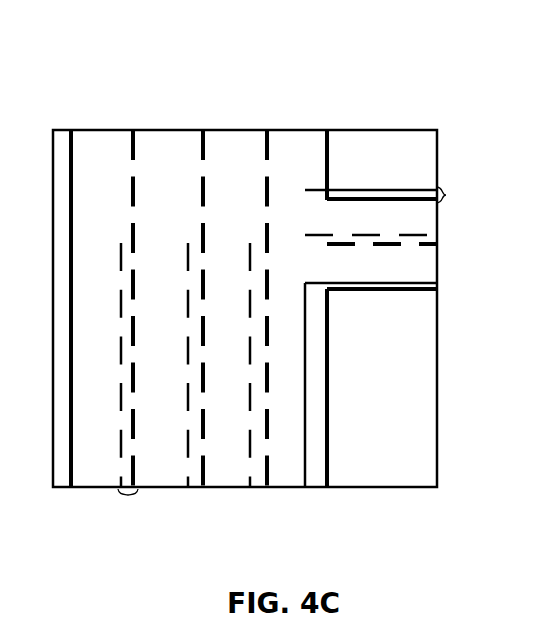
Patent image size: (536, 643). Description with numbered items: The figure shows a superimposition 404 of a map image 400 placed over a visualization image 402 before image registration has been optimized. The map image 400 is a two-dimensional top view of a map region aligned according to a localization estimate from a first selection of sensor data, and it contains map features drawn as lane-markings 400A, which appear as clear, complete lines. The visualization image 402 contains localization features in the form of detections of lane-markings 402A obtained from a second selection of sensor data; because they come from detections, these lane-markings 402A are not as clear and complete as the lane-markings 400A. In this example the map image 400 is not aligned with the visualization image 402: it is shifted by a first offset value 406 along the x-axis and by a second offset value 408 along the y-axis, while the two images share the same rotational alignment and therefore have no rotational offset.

The superimposition 404 is at (316, 97).
The map image 400 is at (371, 266).
The visualization image 402 is at (254, 266).
The lane-markings 400A is at (413, 190).
The detections of lane-markings 402A is at (414, 193).
The second offset value 408 is at (446, 195).
The first offset value 406 is at (128, 496).